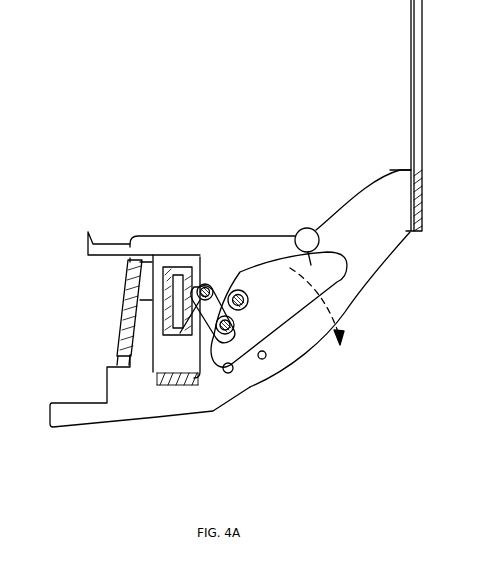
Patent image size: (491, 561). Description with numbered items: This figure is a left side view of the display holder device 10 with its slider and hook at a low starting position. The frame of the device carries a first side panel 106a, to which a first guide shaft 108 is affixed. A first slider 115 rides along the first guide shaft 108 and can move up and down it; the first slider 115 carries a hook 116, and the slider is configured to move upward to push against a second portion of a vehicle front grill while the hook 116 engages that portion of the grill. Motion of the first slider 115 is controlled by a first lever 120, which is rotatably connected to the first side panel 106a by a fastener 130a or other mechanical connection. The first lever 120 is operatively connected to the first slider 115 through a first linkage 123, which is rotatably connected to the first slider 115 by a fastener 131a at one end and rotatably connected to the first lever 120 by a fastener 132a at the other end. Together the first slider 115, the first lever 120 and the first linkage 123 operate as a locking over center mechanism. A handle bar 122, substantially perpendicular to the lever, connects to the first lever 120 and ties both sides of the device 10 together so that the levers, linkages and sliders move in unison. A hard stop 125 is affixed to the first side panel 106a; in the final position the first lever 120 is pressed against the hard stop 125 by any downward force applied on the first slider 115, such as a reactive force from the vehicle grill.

The holder device 10 is at (380, 398).
The first side panel 106a is at (130, 390).
The first guide shaft 108 is at (178, 321).
The first slider 115 is at (162, 258).
The hook 116 is at (90, 231).
The first lever 120 is at (270, 267).
The handle bar 122 is at (322, 250).
The first linkage 123 is at (237, 290).
The hard stop 125 is at (232, 373).
The fastener 130a is at (254, 331).
The fastener 131a is at (206, 285).
The fastener 132a is at (234, 330).